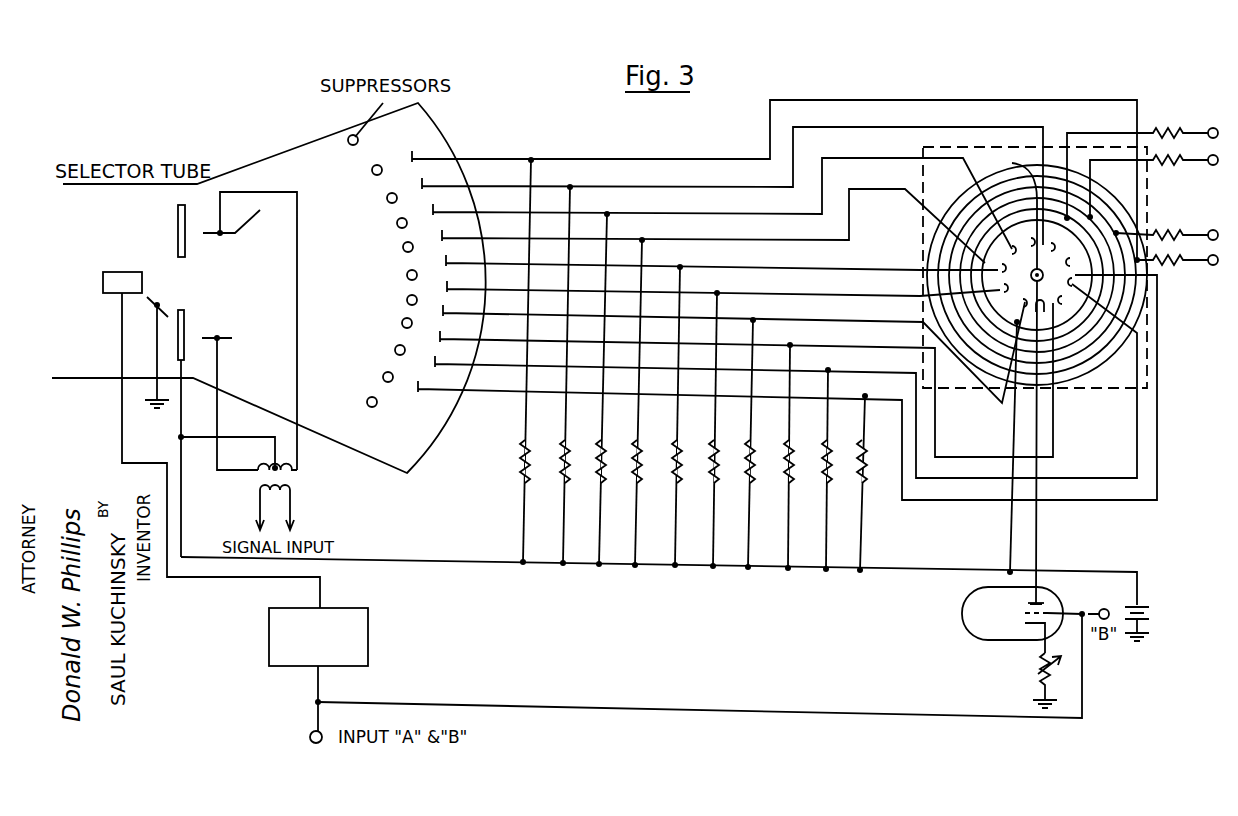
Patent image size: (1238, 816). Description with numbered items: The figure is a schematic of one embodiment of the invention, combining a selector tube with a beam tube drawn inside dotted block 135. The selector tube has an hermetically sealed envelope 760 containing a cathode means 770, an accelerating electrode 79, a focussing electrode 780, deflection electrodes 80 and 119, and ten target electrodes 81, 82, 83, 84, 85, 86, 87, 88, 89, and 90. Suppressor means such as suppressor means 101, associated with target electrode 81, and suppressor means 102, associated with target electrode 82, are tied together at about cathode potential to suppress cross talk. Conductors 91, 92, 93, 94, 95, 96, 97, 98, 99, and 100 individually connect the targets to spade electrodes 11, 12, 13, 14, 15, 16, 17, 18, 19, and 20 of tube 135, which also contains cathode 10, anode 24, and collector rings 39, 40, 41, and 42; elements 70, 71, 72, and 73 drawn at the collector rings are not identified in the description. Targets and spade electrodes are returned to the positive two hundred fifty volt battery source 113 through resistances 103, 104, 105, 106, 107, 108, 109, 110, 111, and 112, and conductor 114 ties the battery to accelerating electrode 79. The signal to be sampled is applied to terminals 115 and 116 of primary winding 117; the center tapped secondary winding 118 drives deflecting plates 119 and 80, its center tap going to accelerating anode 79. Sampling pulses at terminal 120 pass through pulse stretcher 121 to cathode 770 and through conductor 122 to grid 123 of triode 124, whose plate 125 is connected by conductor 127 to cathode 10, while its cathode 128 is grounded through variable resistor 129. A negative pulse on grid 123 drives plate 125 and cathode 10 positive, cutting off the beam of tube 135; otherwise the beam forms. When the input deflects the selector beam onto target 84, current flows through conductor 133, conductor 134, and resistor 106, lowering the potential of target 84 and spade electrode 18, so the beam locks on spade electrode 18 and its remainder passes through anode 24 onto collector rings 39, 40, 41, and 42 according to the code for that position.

The cathode 10 is at (1037, 257).
The spade electrode 11 is at (1078, 264).
The spade electrode 12 is at (1079, 287).
The spade electrode 13 is at (1070, 303).
The spade electrode 14 is at (1050, 296).
The spade electrode 15 is at (1017, 307).
The spade electrode 16 is at (999, 291).
The spade electrode 17 is at (999, 267).
The spade electrode 18 is at (1007, 247).
The spade electrode 19 is at (1031, 239).
The spade electrode 20 is at (1058, 241).
The anode 24 is at (940, 260).
The collector ring 39 is at (1098, 347).
The collector ring 40 is at (1083, 362).
The collector ring 41 is at (1126, 298).
The collector ring 42 is at (1145, 320).
The resistor 70 is at (1141, 165).
The resistor 71 is at (1152, 187).
The resistor 72 is at (1158, 238).
The resistor 73 is at (1176, 272).
The accelerating electrode 79 is at (178, 225).
The deflection electrode 80 is at (250, 220).
The target electrode 81 is at (774, 180).
The target electrode 82 is at (732, 186).
The target electrode 83 is at (722, 203).
The target electrode 84 is at (713, 226).
The target electrode 85 is at (722, 255).
The target electrode 86 is at (723, 281).
The target electrode 87 is at (734, 347).
The target electrode 88 is at (746, 380).
The target electrode 89 is at (786, 381).
The target electrode 90 is at (787, 387).
The conductor 91 is at (573, 160).
The conductor 92 is at (612, 187).
The conductor 93 is at (649, 214).
The conductor 94 is at (684, 240).
The conductor 95 is at (722, 267).
The conductor 96 is at (759, 293).
The conductor 97 is at (795, 320).
The conductor 98 is at (832, 345).
The conductor 99 is at (870, 370).
The conductor 100 is at (905, 396).
The suppressor means 101 is at (359, 140).
The suppressor means 102 is at (372, 170).
The resistance 103 is at (523, 470).
The resistance 104 is at (563, 470).
The resistance 105 is at (599, 470).
The resistance 106 is at (635, 470).
The resistance 107 is at (675, 470).
The resistance 108 is at (712, 470).
The resistance 109 is at (748, 470).
The resistance 110 is at (787, 470).
The resistance 111 is at (825, 470).
The resistance 112 is at (860, 470).
The battery source 113 is at (1148, 617).
The conductor 114 is at (410, 558).
The terminal 115 is at (258, 500).
The terminal 116 is at (295, 520).
The primary winding 117 is at (293, 495).
The center tapped secondary winding 118 is at (292, 470).
The deflection electrode 119 is at (252, 362).
The terminal 120 is at (312, 718).
The pulse stretcher 121 is at (372, 633).
The conductor 122 is at (485, 705).
The grid 123 is at (1046, 612).
The triode 124 is at (962, 619).
The plate 125 is at (1032, 603).
The conductor 127 is at (1038, 537).
The cathode 128 is at (1025, 625).
The variable resistor 129 is at (1036, 661).
The conductor 133 is at (523, 236).
The conductor 134 is at (641, 394).
The dotted block 135 is at (1085, 391).
The hermetically sealed envelope 760 is at (258, 158).
The cathode means 770 is at (137, 282).
The focussing electrode 780 is at (168, 250).